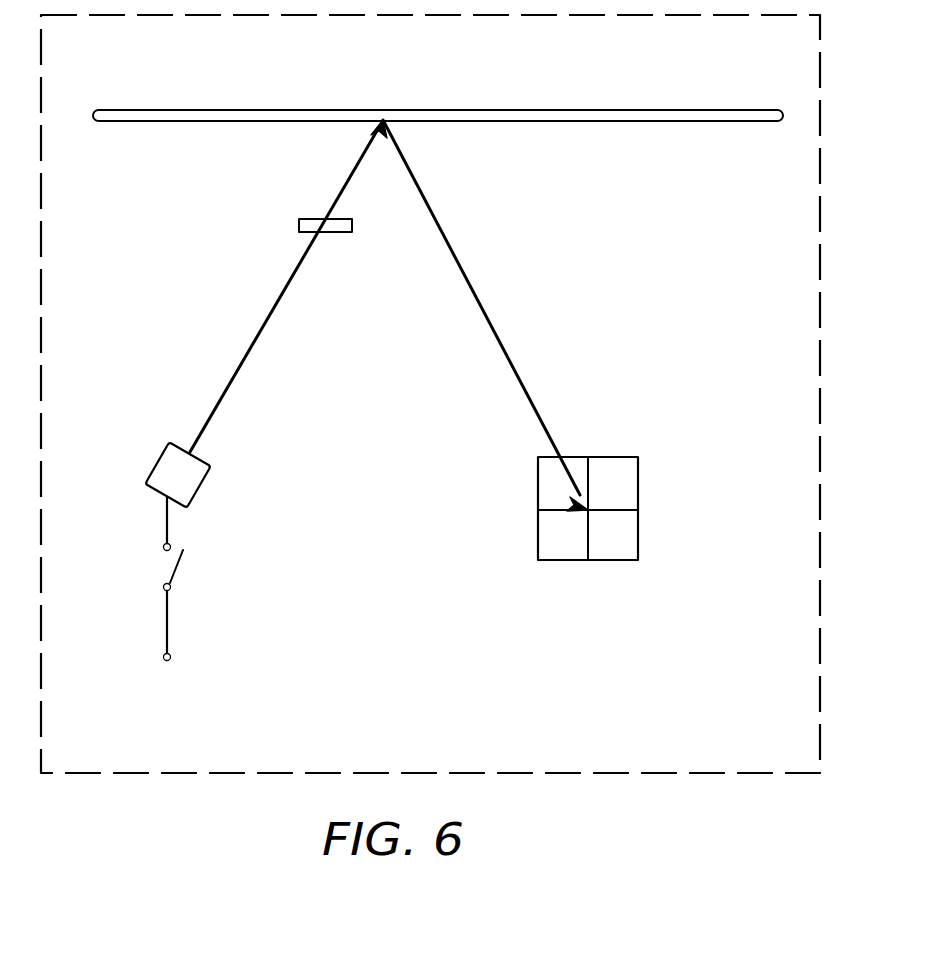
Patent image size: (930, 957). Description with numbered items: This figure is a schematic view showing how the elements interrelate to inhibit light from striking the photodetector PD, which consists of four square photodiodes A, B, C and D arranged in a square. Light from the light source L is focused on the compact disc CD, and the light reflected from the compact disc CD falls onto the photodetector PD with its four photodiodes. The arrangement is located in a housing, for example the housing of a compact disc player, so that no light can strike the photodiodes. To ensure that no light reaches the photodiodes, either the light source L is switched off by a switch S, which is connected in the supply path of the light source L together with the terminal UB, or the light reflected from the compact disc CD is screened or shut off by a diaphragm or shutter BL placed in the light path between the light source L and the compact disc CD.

The compact disc CD is at (661, 121).
The diaphragm or shutter BL is at (299, 225).
The light source L is at (203, 484).
The switch S is at (180, 566).
The battery/power supply terminal UB is at (187, 629).
The photodetector PD is at (639, 472).